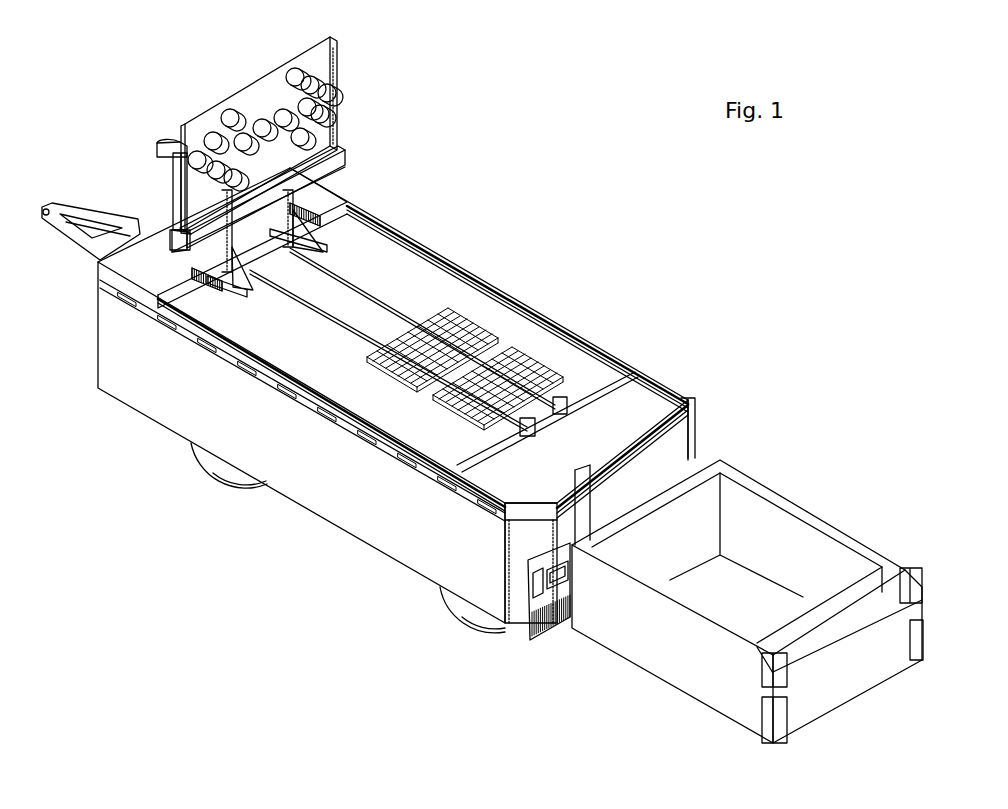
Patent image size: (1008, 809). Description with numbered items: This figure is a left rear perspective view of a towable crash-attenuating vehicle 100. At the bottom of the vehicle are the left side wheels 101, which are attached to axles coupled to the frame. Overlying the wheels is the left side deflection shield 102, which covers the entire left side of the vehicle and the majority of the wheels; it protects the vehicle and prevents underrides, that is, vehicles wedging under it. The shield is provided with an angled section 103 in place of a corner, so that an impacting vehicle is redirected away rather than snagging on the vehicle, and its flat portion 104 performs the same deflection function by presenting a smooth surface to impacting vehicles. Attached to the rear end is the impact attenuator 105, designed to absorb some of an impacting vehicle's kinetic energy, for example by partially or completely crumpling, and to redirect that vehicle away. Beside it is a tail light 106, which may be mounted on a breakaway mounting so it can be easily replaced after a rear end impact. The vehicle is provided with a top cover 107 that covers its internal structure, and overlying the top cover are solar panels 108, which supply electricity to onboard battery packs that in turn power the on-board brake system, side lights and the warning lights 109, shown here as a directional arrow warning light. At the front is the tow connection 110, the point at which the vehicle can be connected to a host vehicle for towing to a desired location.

The towable crash-attenuating vehicle 100 is at (604, 205).
The left side wheels 101 is at (447, 603).
The left side deflection shield 102 is at (177, 392).
The angled section 103 is at (520, 553).
The flat portion 104 is at (142, 352).
The impact attenuator 105 is at (795, 505).
The tail light 106 is at (557, 627).
The top cover 107 is at (363, 250).
The solar panels 108 is at (520, 370).
The warning lights 109 is at (327, 60).
The tow connection 110 is at (50, 210).